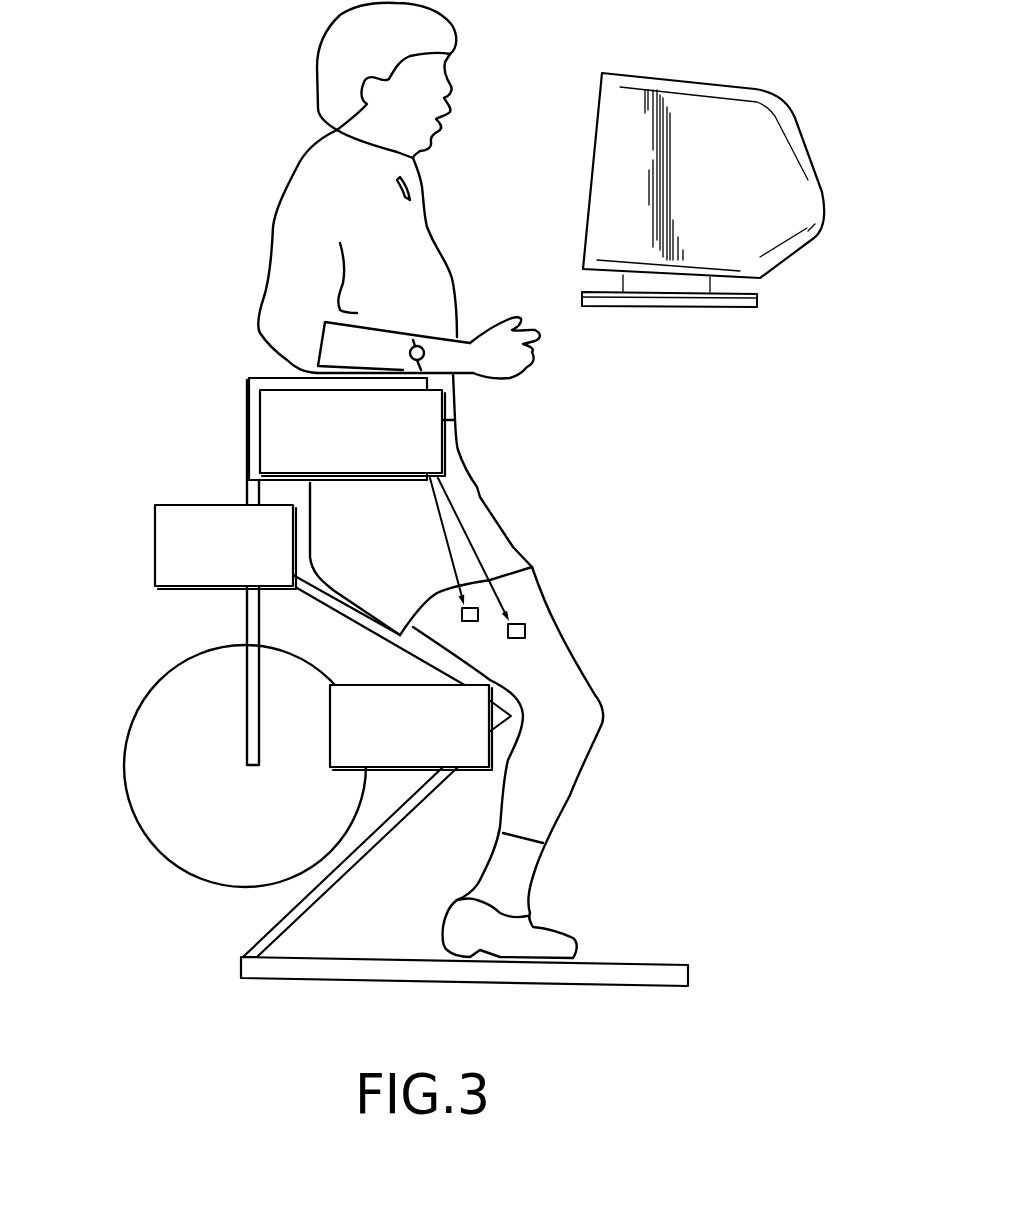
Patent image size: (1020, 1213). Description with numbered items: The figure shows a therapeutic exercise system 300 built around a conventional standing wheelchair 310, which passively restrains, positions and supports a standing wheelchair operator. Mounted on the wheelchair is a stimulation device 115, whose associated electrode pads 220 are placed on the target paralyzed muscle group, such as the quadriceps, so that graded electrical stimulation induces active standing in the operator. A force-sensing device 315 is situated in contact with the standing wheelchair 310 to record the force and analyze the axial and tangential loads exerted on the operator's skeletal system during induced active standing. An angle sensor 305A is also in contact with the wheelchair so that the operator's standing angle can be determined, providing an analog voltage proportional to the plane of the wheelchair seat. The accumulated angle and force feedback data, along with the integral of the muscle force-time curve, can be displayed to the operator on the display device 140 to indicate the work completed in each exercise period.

The display device 140 is at (770, 156).
The stimulation device 115 is at (262, 417).
The angle sensor 305A is at (153, 545).
The standing wheelchair 310 is at (247, 622).
The force-sensing device 315 is at (323, 743).
The electrode pads 220 is at (478, 616).
The therapeutic exercise system 300 is at (657, 682).